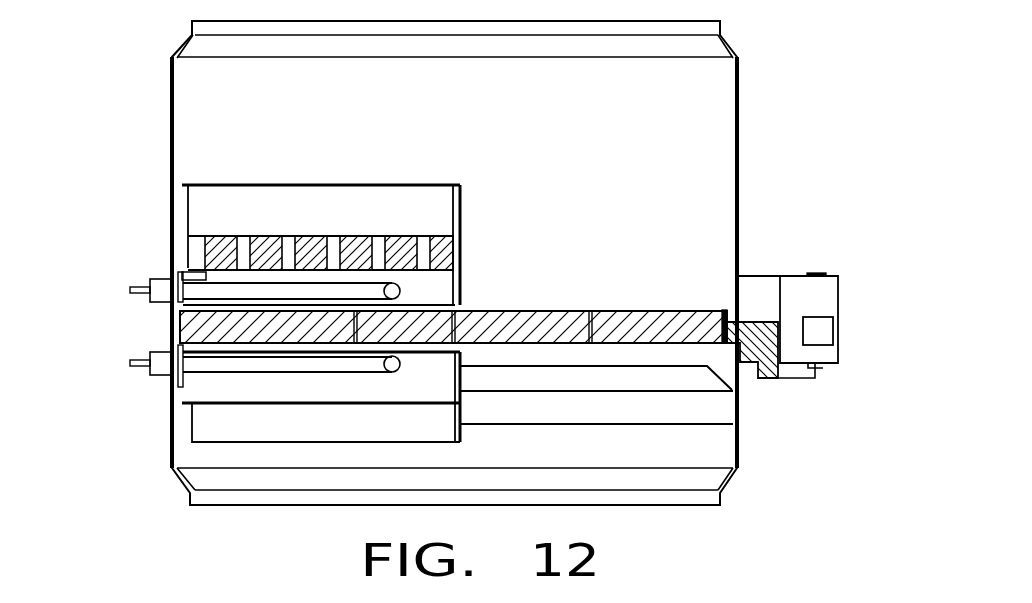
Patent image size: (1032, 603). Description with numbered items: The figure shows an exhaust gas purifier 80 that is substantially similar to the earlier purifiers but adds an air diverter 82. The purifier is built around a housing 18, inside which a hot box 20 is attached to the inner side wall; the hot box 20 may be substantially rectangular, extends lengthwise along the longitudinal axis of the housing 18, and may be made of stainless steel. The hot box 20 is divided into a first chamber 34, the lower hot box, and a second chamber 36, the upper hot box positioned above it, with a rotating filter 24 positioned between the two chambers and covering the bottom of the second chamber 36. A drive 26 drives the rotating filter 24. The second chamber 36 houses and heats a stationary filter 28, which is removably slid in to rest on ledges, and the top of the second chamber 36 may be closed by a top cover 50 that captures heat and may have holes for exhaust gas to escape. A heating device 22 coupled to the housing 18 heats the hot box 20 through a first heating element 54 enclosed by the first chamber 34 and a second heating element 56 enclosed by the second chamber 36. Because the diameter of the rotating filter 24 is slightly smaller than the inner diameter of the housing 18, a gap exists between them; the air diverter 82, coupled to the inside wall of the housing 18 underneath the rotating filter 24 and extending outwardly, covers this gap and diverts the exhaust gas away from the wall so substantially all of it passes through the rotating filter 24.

The housing 18 is at (740, 180).
The hot box 20 is at (334, 181).
The heating device 22 is at (117, 280).
The rotating filter 24 is at (508, 311).
The drive 26 is at (843, 296).
The stationary filter 28 is at (352, 235).
The first chamber 34 is at (216, 391).
The second chamber 36 is at (218, 207).
The top cover 50 is at (437, 182).
The first heating element 54 is at (205, 373).
The second heating element 56 is at (174, 328).
The exhaust gas purifier 80 is at (150, 117).
The air diverter 82 is at (687, 422).